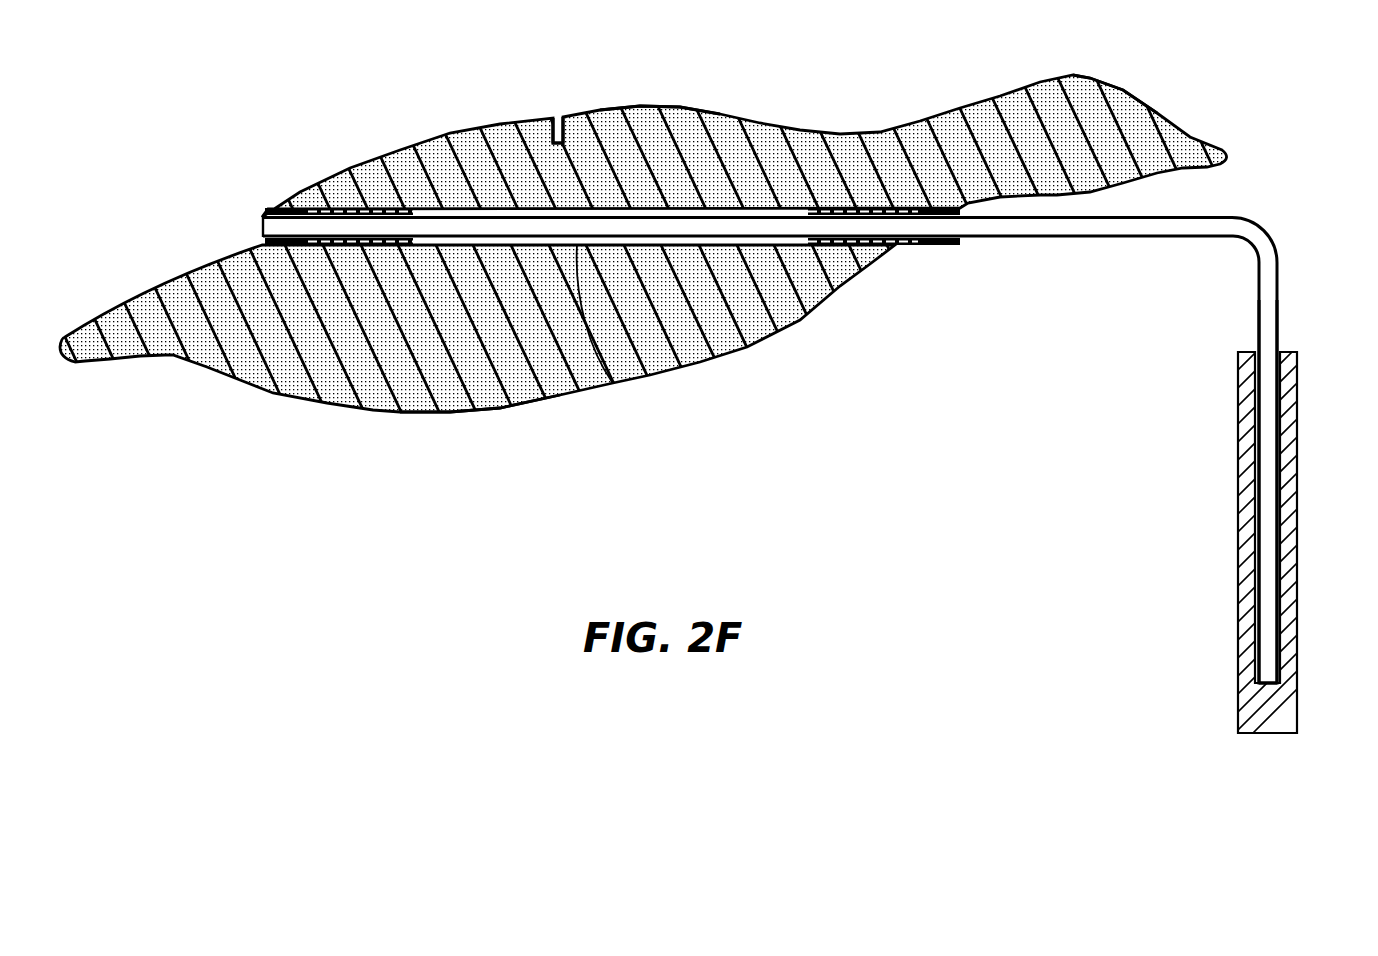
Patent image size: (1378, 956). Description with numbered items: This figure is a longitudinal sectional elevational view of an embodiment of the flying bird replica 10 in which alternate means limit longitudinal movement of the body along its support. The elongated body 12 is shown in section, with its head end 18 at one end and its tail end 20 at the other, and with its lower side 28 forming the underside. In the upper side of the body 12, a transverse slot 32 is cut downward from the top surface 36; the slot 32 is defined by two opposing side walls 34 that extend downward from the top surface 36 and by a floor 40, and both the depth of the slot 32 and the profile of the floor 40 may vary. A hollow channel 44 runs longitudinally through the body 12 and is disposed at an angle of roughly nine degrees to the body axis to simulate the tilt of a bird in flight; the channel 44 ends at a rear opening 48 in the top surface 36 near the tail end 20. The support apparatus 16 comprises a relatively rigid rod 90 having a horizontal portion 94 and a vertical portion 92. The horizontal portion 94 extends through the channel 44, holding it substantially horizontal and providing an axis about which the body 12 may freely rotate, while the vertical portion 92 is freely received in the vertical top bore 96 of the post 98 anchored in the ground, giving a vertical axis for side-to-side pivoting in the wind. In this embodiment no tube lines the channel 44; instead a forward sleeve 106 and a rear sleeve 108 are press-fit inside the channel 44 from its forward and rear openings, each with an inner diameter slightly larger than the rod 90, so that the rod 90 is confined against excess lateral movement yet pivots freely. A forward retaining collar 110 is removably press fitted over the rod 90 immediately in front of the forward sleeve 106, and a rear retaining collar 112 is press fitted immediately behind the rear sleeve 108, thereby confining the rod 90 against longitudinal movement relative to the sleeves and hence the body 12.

The flying bird replica 10 is at (861, 86).
The body 12 is at (659, 40).
The support apparatus 16 is at (1302, 186).
The head end 18 is at (1218, 100).
The tail end 20 is at (123, 277).
The lower side 28 is at (507, 406).
The transverse slot 32 is at (553, 118).
The side walls 34 is at (560, 118).
The top surface 36 is at (668, 104).
The floor 40 is at (548, 120).
The hollow channel 44 is at (617, 381).
The rear opening 48 is at (218, 221).
The rod 90 is at (1195, 273).
The vertical portion 92 is at (1278, 295).
The horizontal portion 94 is at (1003, 238).
The vertical top bore 96 is at (1277, 477).
The post 98 is at (1240, 497).
The forward sleeve 106 is at (850, 246).
The rear sleeve 108 is at (333, 207).
The forward retaining collar 110 is at (930, 246).
The rear retaining collar 112 is at (268, 206).